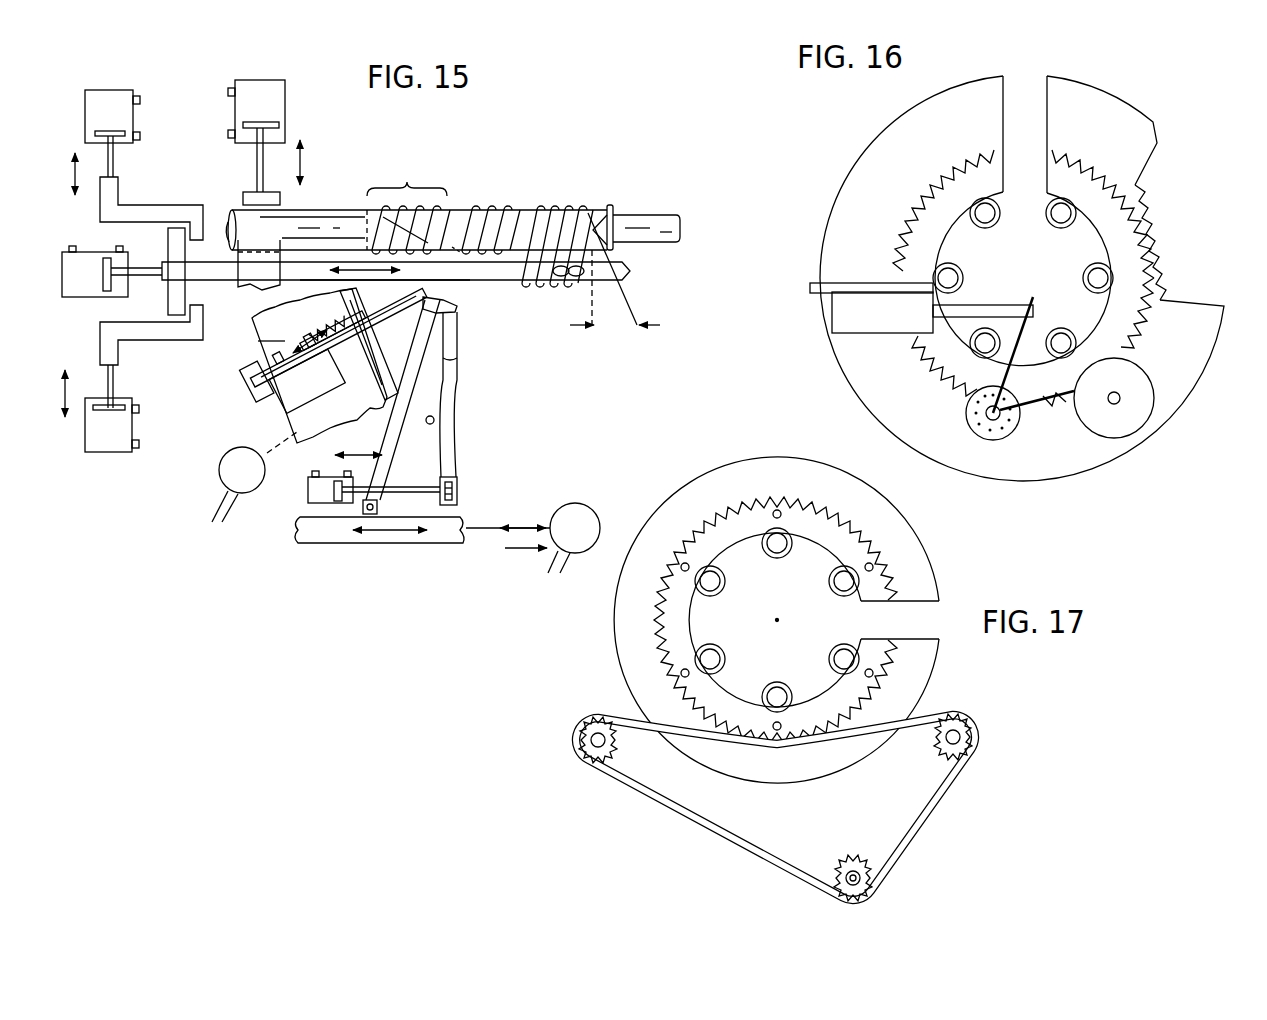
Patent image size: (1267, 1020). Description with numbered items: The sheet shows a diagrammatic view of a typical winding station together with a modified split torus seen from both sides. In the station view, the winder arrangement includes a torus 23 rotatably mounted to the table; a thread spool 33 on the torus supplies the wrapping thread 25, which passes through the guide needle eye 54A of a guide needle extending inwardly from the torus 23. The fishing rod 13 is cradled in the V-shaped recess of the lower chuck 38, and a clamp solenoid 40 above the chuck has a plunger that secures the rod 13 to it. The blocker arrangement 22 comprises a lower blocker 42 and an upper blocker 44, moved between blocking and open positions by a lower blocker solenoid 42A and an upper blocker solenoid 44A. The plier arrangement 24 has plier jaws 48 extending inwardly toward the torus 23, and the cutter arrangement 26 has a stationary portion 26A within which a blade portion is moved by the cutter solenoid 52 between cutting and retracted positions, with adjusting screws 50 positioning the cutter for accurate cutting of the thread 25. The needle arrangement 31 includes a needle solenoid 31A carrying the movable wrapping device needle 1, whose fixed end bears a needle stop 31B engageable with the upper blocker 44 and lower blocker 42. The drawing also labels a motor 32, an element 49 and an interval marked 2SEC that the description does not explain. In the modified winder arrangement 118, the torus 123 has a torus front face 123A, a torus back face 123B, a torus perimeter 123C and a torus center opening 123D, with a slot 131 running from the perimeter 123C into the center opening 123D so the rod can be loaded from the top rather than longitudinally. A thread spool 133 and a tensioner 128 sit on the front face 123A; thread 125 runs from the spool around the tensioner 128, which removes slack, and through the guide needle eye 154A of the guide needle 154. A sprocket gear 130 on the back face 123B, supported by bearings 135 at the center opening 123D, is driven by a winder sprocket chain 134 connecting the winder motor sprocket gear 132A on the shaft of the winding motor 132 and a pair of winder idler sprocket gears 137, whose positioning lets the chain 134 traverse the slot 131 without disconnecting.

In FIG. 15, the fishing rod wrapping device needle 1 is at (479, 284).
In FIG. 15, the fishing rod 13 is at (647, 215).
In FIG. 15, the blocker arrangement 22 is at (152, 358).
In FIG. 15, the torus 23 is at (238, 315).
In FIG. 15, the plier arrangement 24 is at (450, 425).
In FIG. 15, the wrapping thread 25 is at (575, 212).
In FIG. 15, the cutter arrangement 26 is at (365, 326).
In FIG. 15, the stationary portion 26A is at (377, 325).
In FIG. 15, the needle arrangement 31 is at (633, 265).
In FIG. 15, the needle solenoid 31A is at (62, 260).
In FIG. 15, the needle stop 31B is at (163, 300).
In FIG. 15, the winding motor 32 is at (218, 462).
In FIG. 15, the thread spool 33 is at (533, 538).
In FIG. 15, the lower chuck 38 is at (259, 265).
In FIG. 15, the clamp solenoid 40 is at (268, 82).
In FIG. 15, the lower blocker 42 is at (135, 342).
In FIG. 15, the lower blocker solenoid 42A is at (100, 450).
In FIG. 15, the upper blocker 44 is at (160, 205).
In FIG. 15, the upper blocker solenoid 44A is at (108, 93).
In FIG. 15, the plier jaws 48 is at (449, 332).
In FIG. 15, the actuator box 49 is at (308, 490).
In FIG. 15, the adjusting screws 50 is at (379, 530).
In FIG. 15, the cutter solenoid 52 is at (262, 412).
In FIG. 15, the guide needle eye 54A is at (450, 358).
In FIG. 16, the winder arrangement 118 is at (858, 162).
In FIG. 17, the winder arrangement 118 is at (733, 462).
In FIG. 16, the torus 123 is at (897, 122).
In FIG. 17, the torus 123 is at (682, 488).
In FIG. 16, the torus front face 123A is at (855, 192).
In FIG. 17, the torus back face 123B is at (802, 476).
In FIG. 17, the torus perimeter 123C is at (916, 532).
In FIG. 17, the torus center opening 123D is at (820, 545).
In FIG. 16, the thread 125 is at (1050, 408).
In FIG. 16, the tensioner 128 is at (966, 413).
In FIG. 16, the sprocket gear 130 is at (1145, 235).
In FIG. 17, the sprocket gear 130 is at (878, 551).
In FIG. 17, the slot 131 is at (915, 638).
In FIG. 17, the winding motor 132 is at (870, 867).
In FIG. 17, the winder motor sprocket gear 132A is at (833, 882).
In FIG. 16, the thread spool 133 is at (1152, 398).
In FIG. 17, the winder sprocket chain 134 is at (933, 816).
In FIG. 16, the bearings 135 is at (997, 225).
In FIG. 17, the bearings 135 is at (700, 597).
In FIG. 17, the winder idler sprocket gears 137 is at (590, 726).
In FIG. 16, the guide needle 154 is at (1010, 304).
In FIG. 16, the guide needle eye 154A is at (1031, 307).
In FIG. 15, the 2 second interval 2SEC is at (645, 275).